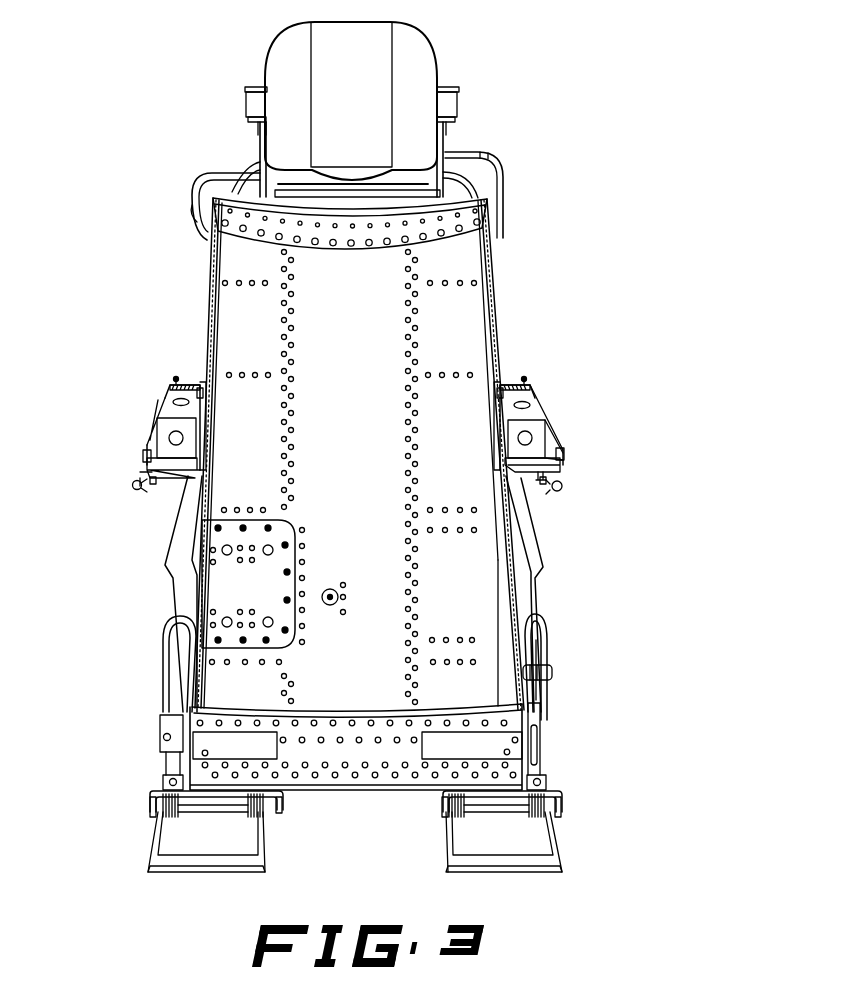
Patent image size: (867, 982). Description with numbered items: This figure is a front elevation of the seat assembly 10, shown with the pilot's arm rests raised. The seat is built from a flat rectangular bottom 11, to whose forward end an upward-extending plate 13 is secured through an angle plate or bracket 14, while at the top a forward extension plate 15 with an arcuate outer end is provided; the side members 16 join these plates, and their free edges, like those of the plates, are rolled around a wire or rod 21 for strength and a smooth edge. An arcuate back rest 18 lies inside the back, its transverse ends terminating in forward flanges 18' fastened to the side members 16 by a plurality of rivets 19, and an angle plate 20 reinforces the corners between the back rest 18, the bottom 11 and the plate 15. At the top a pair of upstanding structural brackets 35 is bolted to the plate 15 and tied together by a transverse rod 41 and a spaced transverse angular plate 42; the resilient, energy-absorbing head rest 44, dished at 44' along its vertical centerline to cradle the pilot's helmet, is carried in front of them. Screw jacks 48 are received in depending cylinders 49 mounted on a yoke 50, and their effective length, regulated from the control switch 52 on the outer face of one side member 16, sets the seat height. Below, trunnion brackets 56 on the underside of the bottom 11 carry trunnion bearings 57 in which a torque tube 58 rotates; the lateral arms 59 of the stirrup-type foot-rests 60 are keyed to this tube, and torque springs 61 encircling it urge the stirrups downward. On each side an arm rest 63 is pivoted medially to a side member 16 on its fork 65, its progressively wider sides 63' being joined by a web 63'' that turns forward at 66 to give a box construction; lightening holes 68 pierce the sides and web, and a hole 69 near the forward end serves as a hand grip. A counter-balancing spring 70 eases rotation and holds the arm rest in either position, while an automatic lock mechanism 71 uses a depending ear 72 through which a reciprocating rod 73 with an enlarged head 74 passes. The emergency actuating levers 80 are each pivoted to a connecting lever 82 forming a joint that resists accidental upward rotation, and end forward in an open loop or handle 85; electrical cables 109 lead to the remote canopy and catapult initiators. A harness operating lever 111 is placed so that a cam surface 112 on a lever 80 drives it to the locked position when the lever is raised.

The seat assembly 10 is at (358, 353).
The bottom 11 is at (410, 797).
The upward-extending plate 13 is at (543, 762).
The angle plate or bracket 14 is at (363, 790).
The extension plate 15 is at (210, 208).
The side members 16 is at (203, 325).
The back rest 18 is at (372, 329).
The forward extending flange 18' is at (355, 607).
The rivets 19 is at (215, 316).
The angle plate 20 is at (478, 240).
The wire or rod 21 is at (486, 200).
The structural brackets 35 is at (262, 172).
The transverse bar or rod 41 is at (455, 188).
The transverse angular plate 42 is at (275, 189).
The head rest 44 is at (334, 103).
The recess 44' is at (387, 95).
The screw jack 48 is at (262, 134).
The depending tube or cylinder 49 is at (260, 143).
The yoke 50 is at (458, 100).
The control switch 52 is at (160, 738).
The trunnion bracket 56 is at (146, 805).
The trunnion bearings 57 is at (152, 812).
The torque tube 58 is at (234, 810).
The arms 59 is at (155, 850).
The stirrup-type foot-rest 60 is at (240, 872).
The torque spring 61 is at (172, 817).
The arm rest 63 is at (349, 427).
The sides 63' is at (353, 422).
The web 63'' is at (354, 385).
The fork 65 is at (202, 382).
The extension 66 is at (197, 470).
The lightening holes 68 is at (183, 437).
The lightening hole 69 is at (145, 452).
The counter-balancing spring 70 is at (176, 380).
The automatic lock mechanism 71 is at (141, 488).
The depending ear 72 is at (140, 475).
The reciprocating rod 73 is at (152, 484).
The head 74 is at (132, 485).
The actuating lever 80 is at (165, 565).
The connecting lever 82 is at (199, 388).
The handle 85 is at (157, 658).
The electrical cables 109 is at (498, 163).
The operating lever 111 is at (552, 672).
The cam surface 112 is at (546, 650).